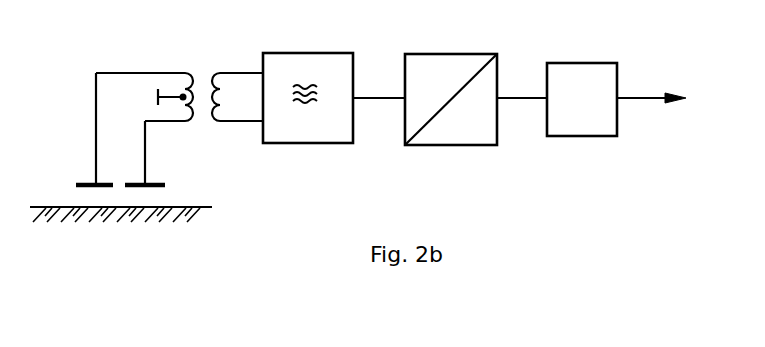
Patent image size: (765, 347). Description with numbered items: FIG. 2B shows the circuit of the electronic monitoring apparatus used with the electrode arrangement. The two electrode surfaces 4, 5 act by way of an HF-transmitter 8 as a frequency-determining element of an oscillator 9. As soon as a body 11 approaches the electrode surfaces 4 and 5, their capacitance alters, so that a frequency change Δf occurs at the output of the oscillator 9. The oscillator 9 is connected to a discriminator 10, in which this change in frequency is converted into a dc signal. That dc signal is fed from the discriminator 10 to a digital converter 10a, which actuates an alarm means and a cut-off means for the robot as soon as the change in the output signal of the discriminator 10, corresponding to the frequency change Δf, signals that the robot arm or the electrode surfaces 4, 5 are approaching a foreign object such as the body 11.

The electrode surface 4 is at (94, 129).
The electrode surface 5 is at (145, 153).
The HF-transmitter 8 is at (203, 66).
The oscillator 9 is at (317, 128).
The discriminator 10 is at (440, 135).
The digital converter 10a is at (569, 122).
The body 11 is at (121, 231).